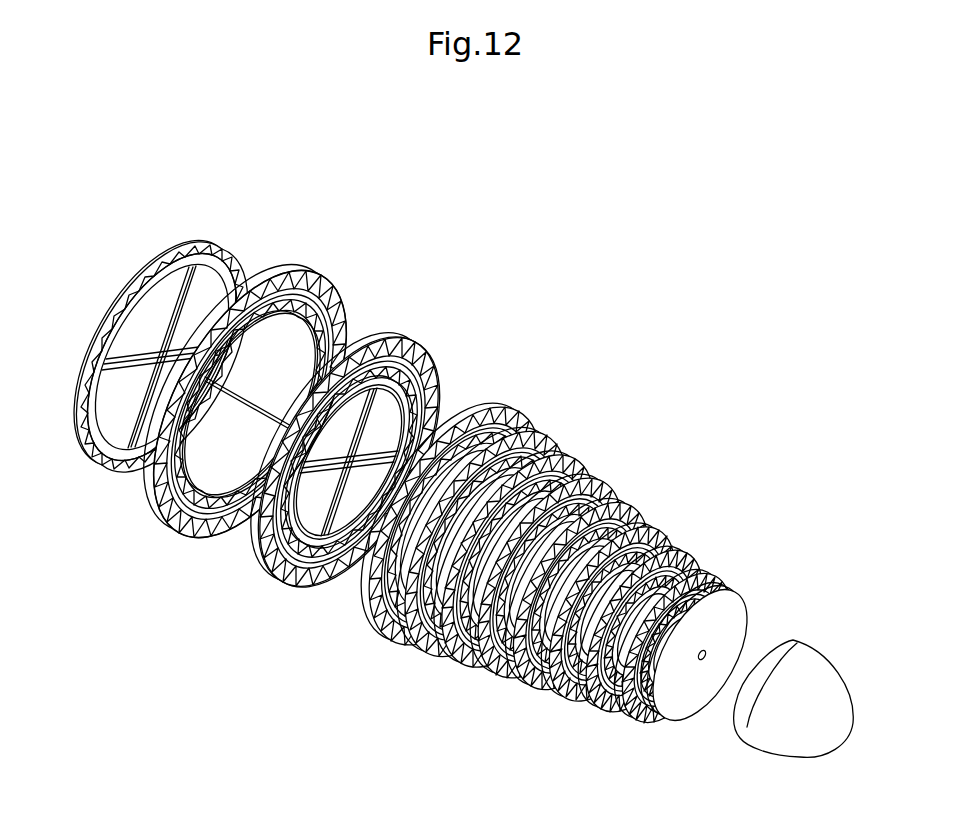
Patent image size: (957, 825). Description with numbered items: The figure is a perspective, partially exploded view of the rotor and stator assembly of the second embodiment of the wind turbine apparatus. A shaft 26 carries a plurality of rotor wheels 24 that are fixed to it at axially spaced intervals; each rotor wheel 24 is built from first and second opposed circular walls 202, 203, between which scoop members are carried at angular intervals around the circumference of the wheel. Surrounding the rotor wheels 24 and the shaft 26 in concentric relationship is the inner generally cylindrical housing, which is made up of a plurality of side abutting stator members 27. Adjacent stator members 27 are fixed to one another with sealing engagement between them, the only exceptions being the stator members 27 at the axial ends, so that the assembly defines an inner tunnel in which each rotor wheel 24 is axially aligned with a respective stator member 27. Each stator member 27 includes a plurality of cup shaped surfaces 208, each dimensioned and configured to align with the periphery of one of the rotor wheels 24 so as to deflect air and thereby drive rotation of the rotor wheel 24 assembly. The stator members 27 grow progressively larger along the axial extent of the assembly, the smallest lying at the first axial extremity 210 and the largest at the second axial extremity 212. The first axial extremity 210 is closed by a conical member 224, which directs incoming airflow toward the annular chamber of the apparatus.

The rotor wheel 24 is at (115, 478).
The shaft 26 is at (257, 410).
The stator member 27 is at (315, 280).
The first circular wall 202 is at (184, 247).
The second circular wall 203 is at (234, 259).
The cup shaped surface 208 is at (313, 587).
The first axial extremity 210 is at (660, 707).
The second axial extremity 212 is at (165, 517).
The conical member 224 is at (800, 683).